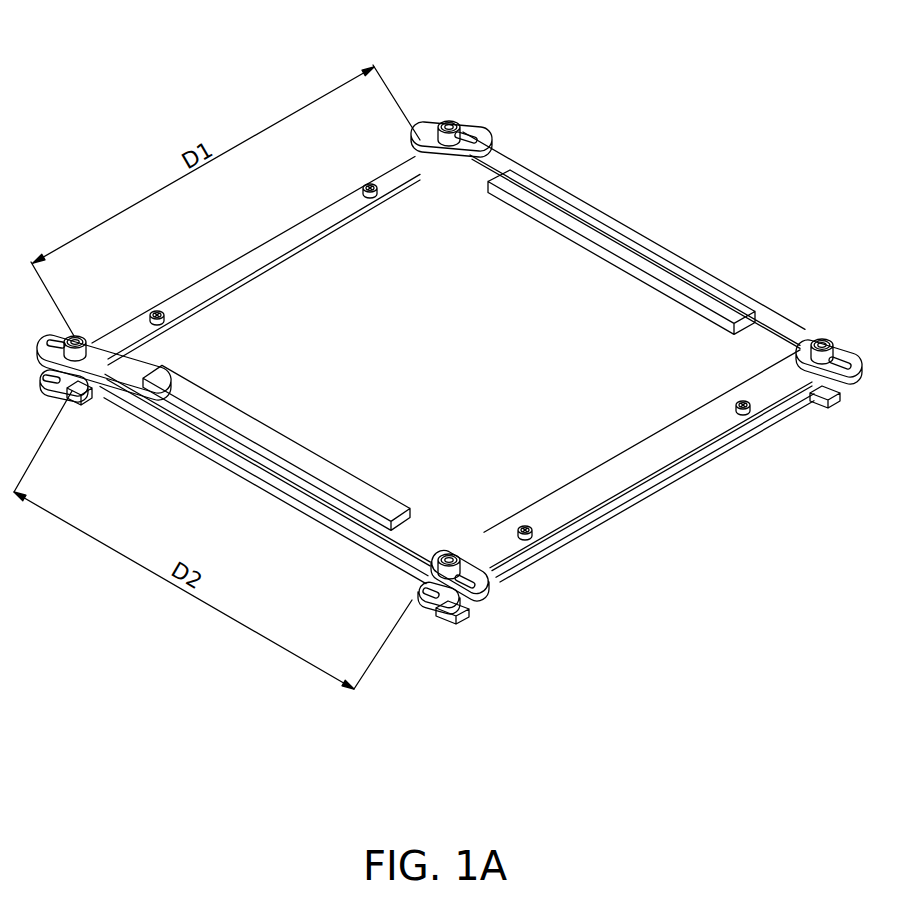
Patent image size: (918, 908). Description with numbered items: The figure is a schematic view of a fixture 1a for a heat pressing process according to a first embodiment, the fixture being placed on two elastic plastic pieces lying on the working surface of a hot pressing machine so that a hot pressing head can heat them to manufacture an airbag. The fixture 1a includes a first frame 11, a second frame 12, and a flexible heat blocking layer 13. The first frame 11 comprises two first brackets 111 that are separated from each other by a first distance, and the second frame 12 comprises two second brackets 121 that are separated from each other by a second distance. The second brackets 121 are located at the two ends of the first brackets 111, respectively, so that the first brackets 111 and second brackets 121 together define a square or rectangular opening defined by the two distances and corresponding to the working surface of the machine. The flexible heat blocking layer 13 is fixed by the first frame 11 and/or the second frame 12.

The fixture for heat pressing process 1a is at (600, 85).
The first frame 11 is at (598, 206).
The first bracket 111 is at (200, 432).
The second frame 12 is at (288, 231).
The second bracket 121 is at (622, 509).
The flexible heat blocking layer 13 is at (631, 318).